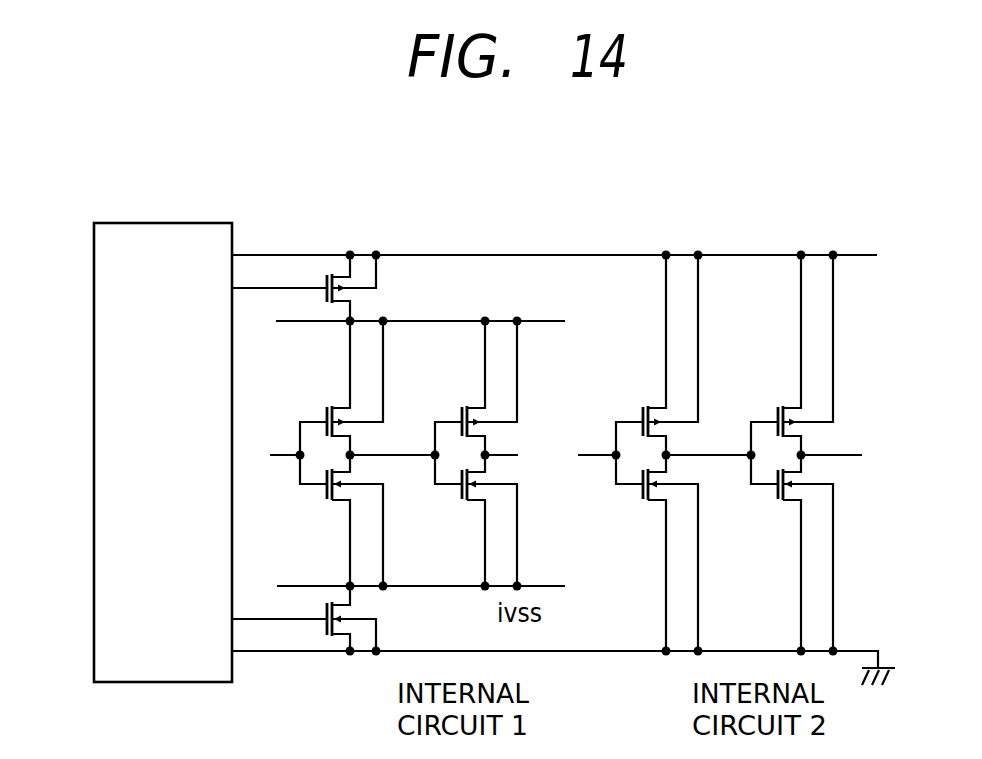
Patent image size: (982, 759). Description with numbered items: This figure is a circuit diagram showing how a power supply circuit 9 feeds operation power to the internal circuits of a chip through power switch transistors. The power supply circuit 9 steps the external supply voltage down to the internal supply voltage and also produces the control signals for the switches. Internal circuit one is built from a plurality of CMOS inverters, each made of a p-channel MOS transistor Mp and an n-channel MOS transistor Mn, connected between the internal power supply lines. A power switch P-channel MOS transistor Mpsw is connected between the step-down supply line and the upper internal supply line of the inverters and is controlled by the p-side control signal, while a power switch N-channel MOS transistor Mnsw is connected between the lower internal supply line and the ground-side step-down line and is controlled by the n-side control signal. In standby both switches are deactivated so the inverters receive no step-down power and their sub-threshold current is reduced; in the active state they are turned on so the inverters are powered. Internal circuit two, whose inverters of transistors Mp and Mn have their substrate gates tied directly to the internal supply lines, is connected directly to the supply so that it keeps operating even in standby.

The power supply circuit 9 is at (120, 222).
The power switch P-channel MOS transistor Mpsw is at (345, 268).
The power switch N-channel MOS transistor Mnsw is at (346, 638).
The p-channel MOS transistor Mp is at (323, 411).
The n-channel MOS transistor Mn is at (323, 497).